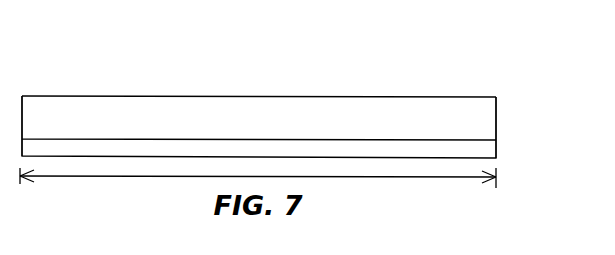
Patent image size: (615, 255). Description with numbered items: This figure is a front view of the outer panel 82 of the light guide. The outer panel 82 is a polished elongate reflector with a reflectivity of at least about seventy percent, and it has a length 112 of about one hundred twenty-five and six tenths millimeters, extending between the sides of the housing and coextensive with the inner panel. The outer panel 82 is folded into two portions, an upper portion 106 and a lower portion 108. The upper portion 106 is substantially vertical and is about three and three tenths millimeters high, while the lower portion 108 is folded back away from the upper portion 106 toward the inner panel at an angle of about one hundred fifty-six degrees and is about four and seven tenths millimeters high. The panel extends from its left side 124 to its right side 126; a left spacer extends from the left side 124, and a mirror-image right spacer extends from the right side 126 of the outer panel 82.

The outer panel 82 is at (213, 96).
The upper portion 106 is at (490, 117).
The lower portion 108 is at (490, 150).
The length 112 is at (155, 177).
The left side 124 is at (23, 95).
The right side 126 is at (493, 97).